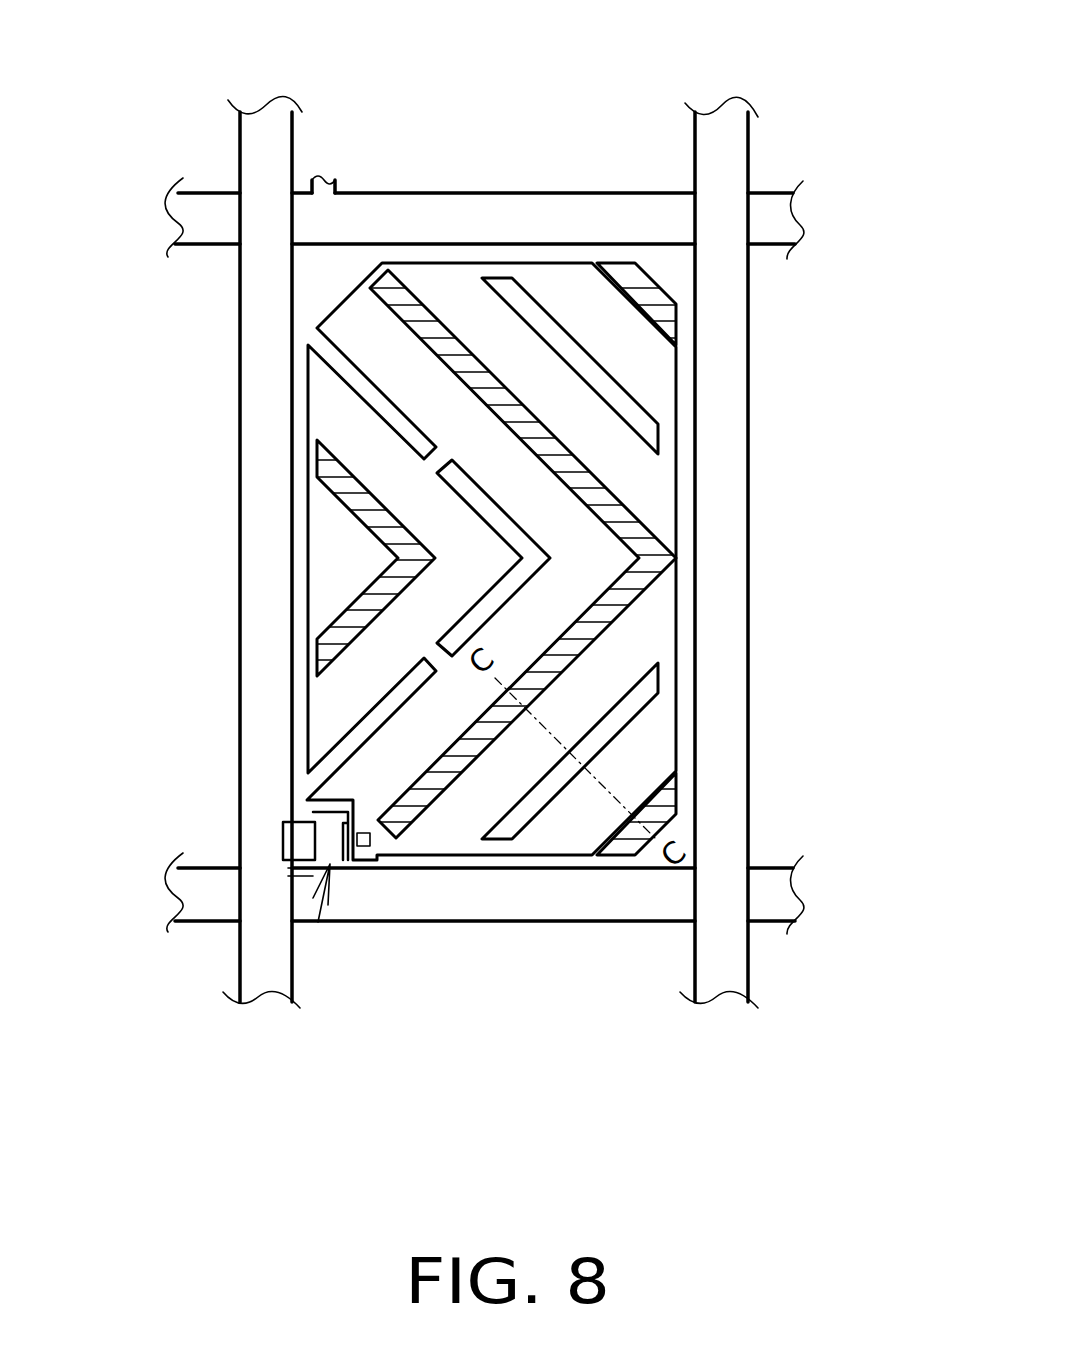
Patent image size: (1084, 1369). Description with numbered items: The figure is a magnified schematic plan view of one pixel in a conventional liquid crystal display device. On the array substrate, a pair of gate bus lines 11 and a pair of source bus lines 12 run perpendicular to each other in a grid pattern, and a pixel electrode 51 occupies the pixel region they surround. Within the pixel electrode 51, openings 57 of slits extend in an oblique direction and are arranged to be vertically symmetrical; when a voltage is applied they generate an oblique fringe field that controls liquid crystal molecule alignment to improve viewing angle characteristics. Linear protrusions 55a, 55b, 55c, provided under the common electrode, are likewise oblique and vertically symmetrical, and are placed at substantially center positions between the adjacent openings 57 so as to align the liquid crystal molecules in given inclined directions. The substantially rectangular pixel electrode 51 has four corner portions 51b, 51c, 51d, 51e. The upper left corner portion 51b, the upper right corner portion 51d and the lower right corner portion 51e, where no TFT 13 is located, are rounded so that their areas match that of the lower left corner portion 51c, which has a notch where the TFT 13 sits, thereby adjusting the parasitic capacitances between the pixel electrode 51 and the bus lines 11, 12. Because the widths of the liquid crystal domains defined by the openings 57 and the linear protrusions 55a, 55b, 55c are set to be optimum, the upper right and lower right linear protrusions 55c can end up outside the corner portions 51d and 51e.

The gate bus line 11 is at (548, 192).
The source bus line 12 is at (238, 960).
The TFT 13 is at (318, 924).
The pixel electrode 51 is at (678, 490).
The upper left corner portion 51b is at (367, 322).
The lower left corner portion 51c is at (375, 780).
The upper right corner portion 51d is at (636, 345).
The lower right corner portion 51e is at (633, 775).
The linear protrusion 55a is at (340, 500).
The linear protrusion 55b is at (460, 345).
The linear protrusion 55c is at (633, 258).
The opening 57 is at (370, 378).